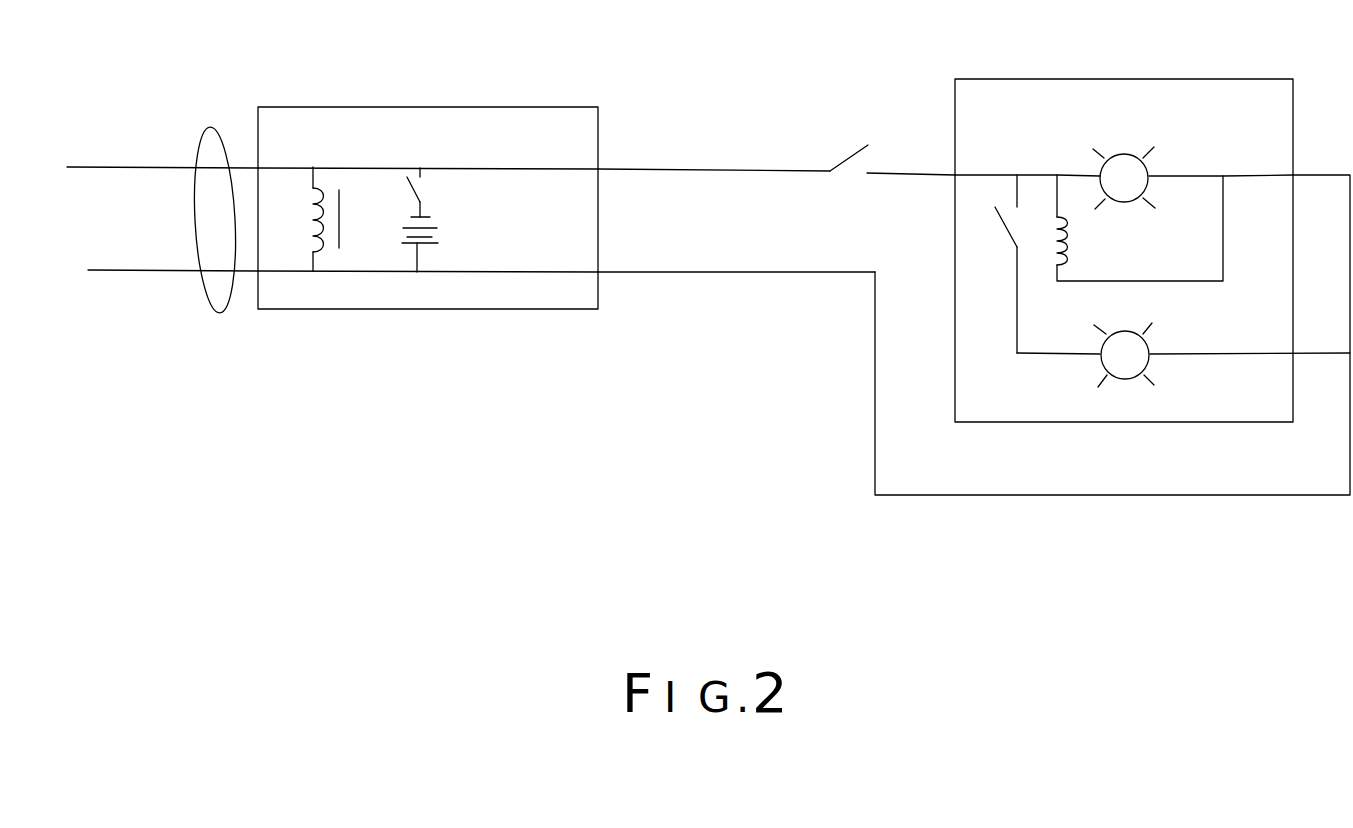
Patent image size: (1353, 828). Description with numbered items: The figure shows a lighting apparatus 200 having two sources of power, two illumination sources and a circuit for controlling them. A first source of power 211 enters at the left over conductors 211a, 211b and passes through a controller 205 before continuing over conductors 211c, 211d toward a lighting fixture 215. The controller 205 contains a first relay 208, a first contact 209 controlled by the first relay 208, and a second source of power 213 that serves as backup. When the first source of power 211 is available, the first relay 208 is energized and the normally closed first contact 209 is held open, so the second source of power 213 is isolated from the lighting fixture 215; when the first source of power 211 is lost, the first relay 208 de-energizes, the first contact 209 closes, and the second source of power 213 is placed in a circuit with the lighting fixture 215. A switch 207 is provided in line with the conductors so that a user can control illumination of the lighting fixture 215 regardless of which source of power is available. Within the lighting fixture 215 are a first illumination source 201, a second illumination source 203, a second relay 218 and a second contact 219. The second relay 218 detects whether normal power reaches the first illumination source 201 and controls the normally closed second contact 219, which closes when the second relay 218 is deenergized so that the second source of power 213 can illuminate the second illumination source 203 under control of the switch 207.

The lighting apparatus 200 is at (705, 506).
The first illumination source 201 is at (1123, 149).
The second illumination source 203 is at (1148, 336).
The controller 205 is at (442, 309).
The switch 207 is at (847, 178).
The first relay 208 is at (306, 219).
The first contact 209 is at (430, 191).
The first source of power 211 is at (207, 314).
The conductor 211a is at (115, 167).
The conductor 211b is at (110, 268).
The conductor 211c is at (652, 168).
The conductor 211d is at (642, 268).
The second source of power 213 is at (440, 241).
The lighting fixture 215 is at (1075, 78).
The second relay 218 is at (1063, 246).
The second contact 219 is at (995, 230).